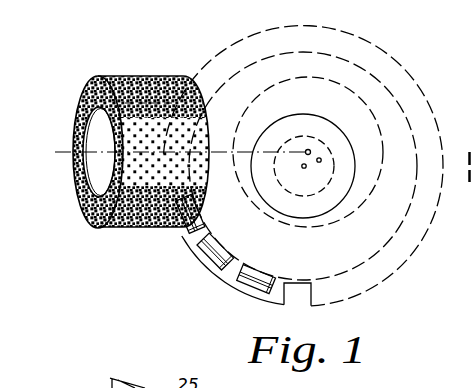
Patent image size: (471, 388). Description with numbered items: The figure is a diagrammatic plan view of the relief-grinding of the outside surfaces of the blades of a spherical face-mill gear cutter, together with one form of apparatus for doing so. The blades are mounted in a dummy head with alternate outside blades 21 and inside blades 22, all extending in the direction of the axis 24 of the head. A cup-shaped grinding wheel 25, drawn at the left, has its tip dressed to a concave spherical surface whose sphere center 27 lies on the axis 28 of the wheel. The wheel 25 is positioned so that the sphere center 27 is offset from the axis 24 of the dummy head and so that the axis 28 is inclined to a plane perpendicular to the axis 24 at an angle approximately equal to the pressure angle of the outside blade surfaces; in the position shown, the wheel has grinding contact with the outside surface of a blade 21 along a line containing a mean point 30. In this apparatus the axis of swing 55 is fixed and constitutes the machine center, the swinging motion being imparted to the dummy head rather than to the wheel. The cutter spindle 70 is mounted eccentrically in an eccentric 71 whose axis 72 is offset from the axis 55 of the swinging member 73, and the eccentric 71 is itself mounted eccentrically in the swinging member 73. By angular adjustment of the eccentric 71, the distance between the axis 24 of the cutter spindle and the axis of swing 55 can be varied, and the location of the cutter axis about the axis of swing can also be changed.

The outside blade 21 is at (245, 292).
The inside blade 22 is at (213, 251).
The axis of the dummy head 24 is at (303, 168).
The cup-shaped grinding wheel 25 is at (140, 228).
The sphere center 27 is at (311, 150).
The axis of the wheel 28 is at (62, 153).
The mean point 30 is at (179, 230).
The axis of swing 55 is at (308, 149).
The cutter spindle 70 is at (325, 188).
The eccentric 71 is at (355, 178).
The axis of the eccentric 72 is at (321, 159).
The swinging member 73 is at (383, 158).